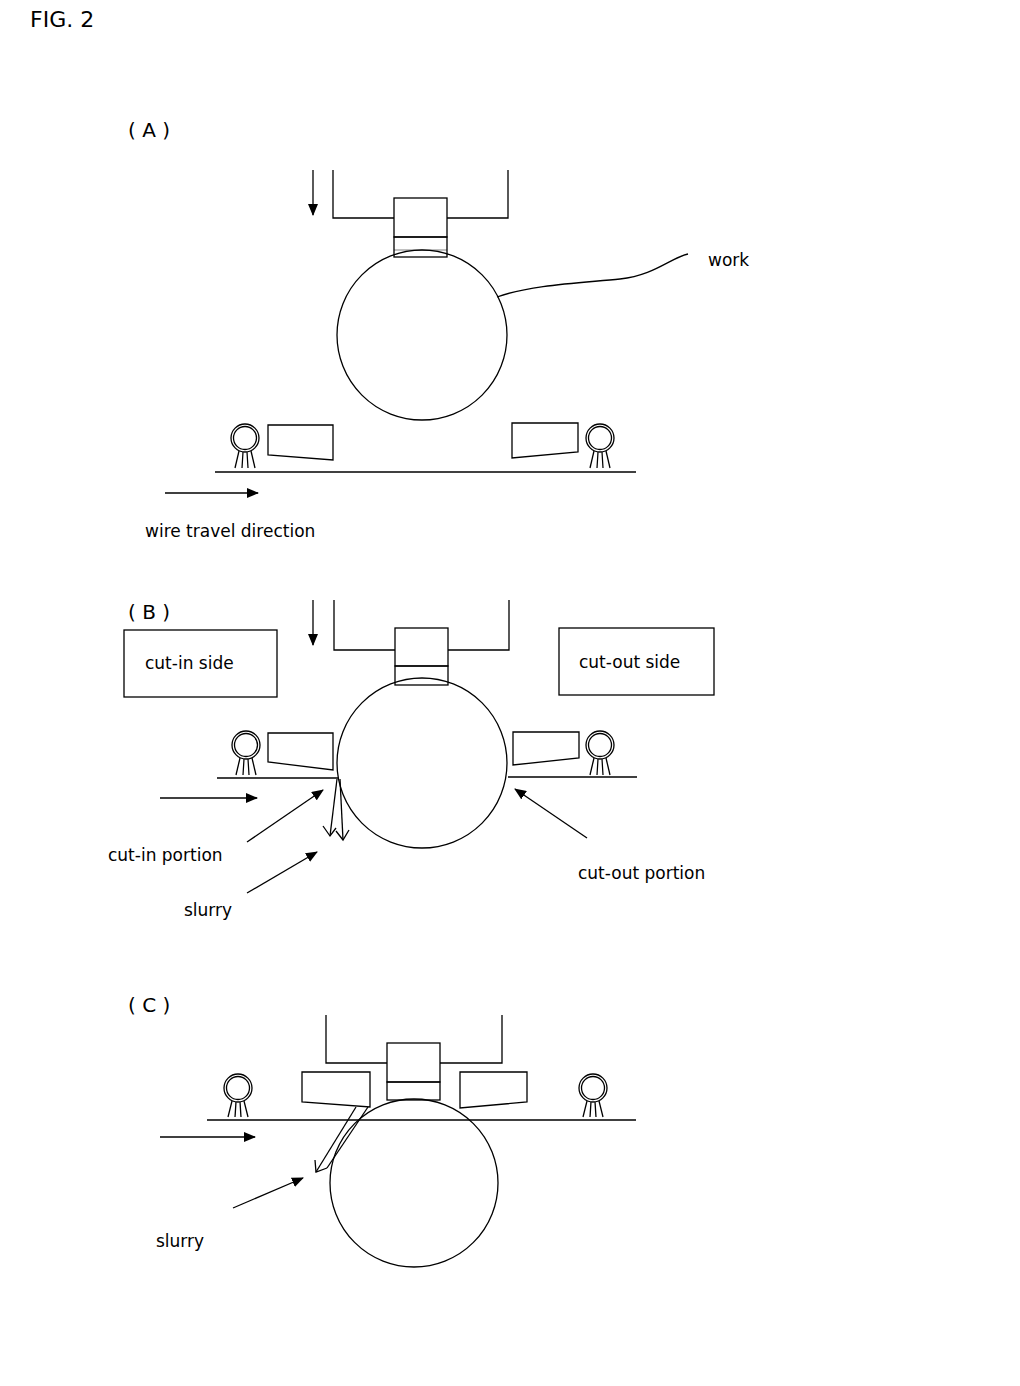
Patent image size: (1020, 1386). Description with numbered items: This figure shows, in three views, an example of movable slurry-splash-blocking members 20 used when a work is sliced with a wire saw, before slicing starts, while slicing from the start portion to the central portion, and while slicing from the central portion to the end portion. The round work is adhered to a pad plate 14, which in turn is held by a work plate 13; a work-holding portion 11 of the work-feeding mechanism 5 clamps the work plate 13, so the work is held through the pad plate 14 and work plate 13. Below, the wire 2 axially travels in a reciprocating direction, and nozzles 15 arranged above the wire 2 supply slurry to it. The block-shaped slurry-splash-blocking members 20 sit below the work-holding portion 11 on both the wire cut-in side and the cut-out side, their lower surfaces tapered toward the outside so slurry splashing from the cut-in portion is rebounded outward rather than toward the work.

The wire 2 is at (522, 474).
The work-feeding mechanism 5 is at (523, 162).
The work-holding portion 11 is at (487, 199).
The work plate 13 is at (427, 218).
The pad plate 14 is at (393, 250).
The nozzle 15 is at (615, 435).
The slurry-splash-blocking member 20 is at (552, 423).